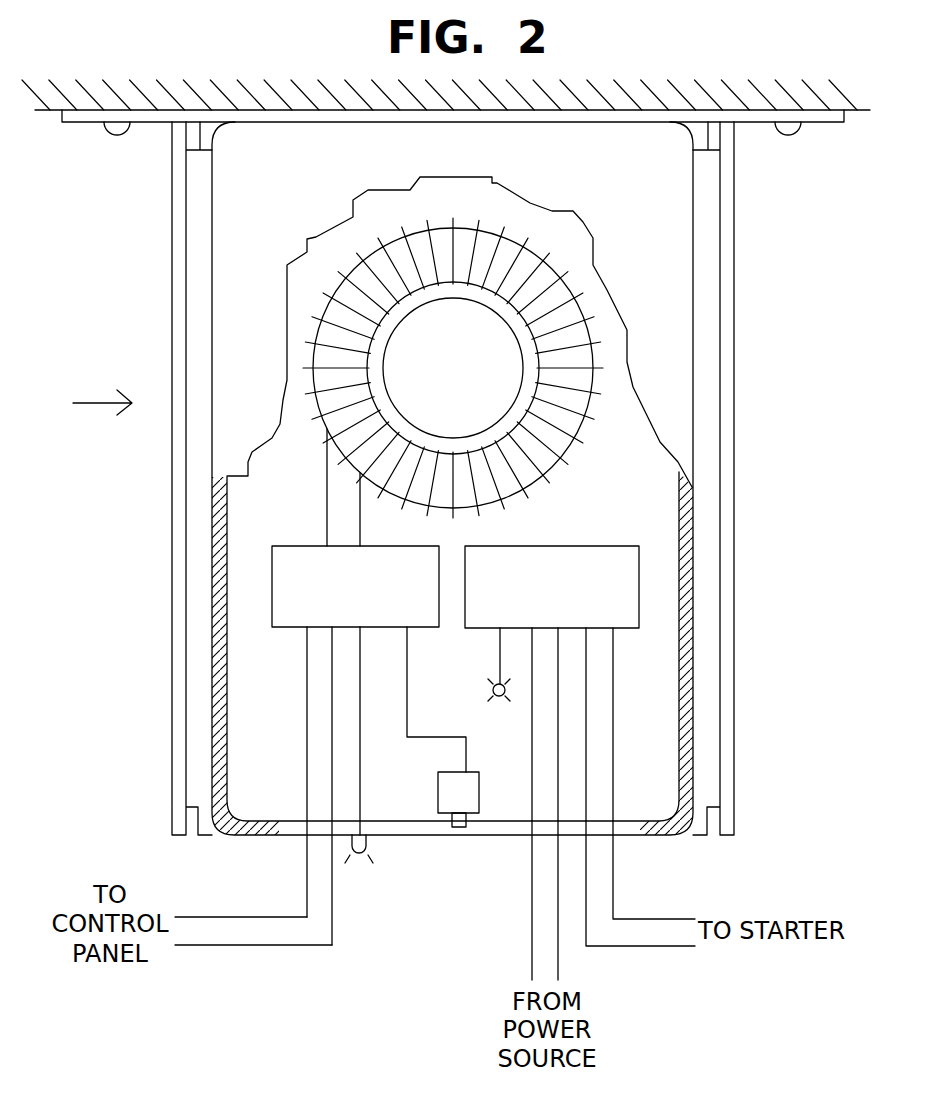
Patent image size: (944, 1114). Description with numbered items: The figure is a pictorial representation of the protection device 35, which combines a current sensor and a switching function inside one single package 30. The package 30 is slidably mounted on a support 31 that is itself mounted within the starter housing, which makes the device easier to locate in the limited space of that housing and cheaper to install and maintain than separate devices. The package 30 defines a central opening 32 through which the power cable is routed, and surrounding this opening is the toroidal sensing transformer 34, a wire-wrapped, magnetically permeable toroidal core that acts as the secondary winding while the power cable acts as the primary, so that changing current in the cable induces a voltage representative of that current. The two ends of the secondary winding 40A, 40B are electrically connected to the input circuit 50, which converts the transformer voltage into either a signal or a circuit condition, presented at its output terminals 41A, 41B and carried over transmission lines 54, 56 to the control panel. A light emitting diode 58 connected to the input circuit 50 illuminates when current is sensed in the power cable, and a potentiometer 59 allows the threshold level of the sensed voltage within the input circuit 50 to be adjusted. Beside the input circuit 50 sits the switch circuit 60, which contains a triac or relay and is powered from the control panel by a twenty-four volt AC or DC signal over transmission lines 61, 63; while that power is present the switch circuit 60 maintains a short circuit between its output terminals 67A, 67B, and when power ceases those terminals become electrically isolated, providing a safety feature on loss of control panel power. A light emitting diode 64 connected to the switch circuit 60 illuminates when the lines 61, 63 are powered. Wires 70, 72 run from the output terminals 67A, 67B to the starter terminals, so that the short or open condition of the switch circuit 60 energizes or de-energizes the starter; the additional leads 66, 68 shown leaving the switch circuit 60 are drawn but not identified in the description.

The package 30 is at (262, 183).
The support 31 is at (727, 300).
The central opening 32 is at (433, 374).
The toroidal sensing transformer 34 is at (506, 258).
The protection device 35 is at (82, 402).
The end of secondary winding 40A is at (327, 546).
The end of secondary winding 40B is at (360, 546).
The output terminal 41A is at (307, 630).
The output terminal 41B is at (332, 630).
The input circuit 50 is at (272, 592).
The transmission line 54 is at (205, 917).
The transmission line 56 is at (205, 945).
The light emitting diode 58 is at (358, 855).
The potentiometer 59 is at (457, 833).
The switch circuit 60 is at (639, 593).
The transmission line 61 is at (532, 933).
The transmission line 63 is at (558, 973).
The light emitting diode 64 is at (489, 688).
The conductor 66 is at (532, 628).
The output terminal 67A is at (613, 628).
The output terminal 67B is at (586, 628).
The conductor 68 is at (558, 628).
The wire 70 is at (660, 946).
The wire 72 is at (660, 919).